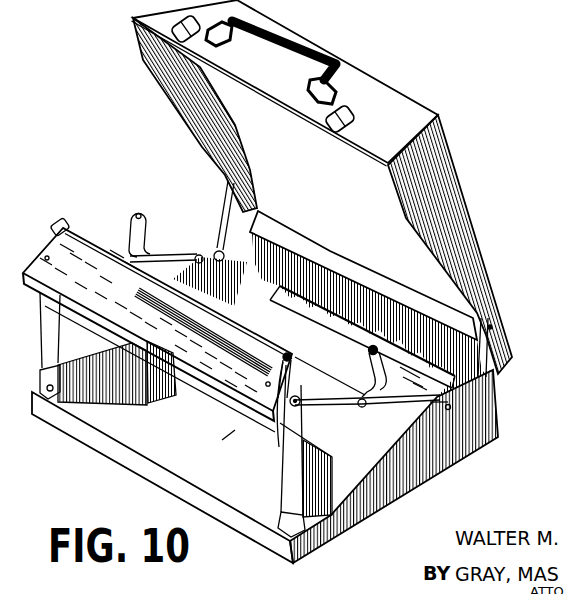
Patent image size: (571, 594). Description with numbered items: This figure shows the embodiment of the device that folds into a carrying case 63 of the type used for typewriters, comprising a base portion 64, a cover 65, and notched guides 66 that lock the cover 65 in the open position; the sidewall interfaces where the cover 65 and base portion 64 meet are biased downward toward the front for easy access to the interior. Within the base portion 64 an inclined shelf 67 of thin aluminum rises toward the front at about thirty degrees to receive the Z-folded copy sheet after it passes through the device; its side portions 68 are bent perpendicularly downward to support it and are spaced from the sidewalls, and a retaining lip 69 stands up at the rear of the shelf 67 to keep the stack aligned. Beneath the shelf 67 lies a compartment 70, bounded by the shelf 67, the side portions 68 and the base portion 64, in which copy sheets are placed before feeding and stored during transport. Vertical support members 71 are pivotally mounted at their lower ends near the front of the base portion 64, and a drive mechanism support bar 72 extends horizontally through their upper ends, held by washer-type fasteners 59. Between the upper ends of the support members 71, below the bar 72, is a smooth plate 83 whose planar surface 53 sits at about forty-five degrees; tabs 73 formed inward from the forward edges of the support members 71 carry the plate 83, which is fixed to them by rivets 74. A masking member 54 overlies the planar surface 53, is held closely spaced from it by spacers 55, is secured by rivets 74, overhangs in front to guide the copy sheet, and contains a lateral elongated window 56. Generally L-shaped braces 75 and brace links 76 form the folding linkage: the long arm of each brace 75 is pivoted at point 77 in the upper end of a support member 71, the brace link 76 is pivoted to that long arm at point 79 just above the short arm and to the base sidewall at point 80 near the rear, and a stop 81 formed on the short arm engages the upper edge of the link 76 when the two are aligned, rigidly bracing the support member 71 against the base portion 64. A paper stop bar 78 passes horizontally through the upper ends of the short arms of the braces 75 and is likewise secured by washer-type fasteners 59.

The planar surface 53 is at (198, 338).
The masking member 54 is at (199, 377).
The spacers 55 is at (294, 392).
The lateral elongated opening or window 56 is at (134, 293).
The washer-type fasteners 59 is at (368, 350).
The carrying case 63 is at (200, 160).
The base portion 64 is at (100, 417).
The cover 65 is at (419, 216).
The notched guides 66 is at (226, 224).
The inclined shelf 67 is at (335, 447).
The side portions 68 is at (151, 395).
The retaining lip 69 is at (276, 336).
The compartment 70 is at (214, 438).
The vertical support members 71 is at (50, 350).
The drive mechanism support bar 72 is at (80, 240).
The tabs 73 is at (281, 443).
The rivets 74 is at (265, 385).
The generally L-shaped braces 75 is at (131, 243).
The brace links 76 is at (172, 261).
The pivot point 77 is at (300, 408).
The paper stop bar 78 is at (280, 288).
The pivot point 79 is at (363, 408).
The pivot point 80 is at (466, 424).
The stop 81 is at (412, 399).
The smooth plate 83 is at (220, 403).